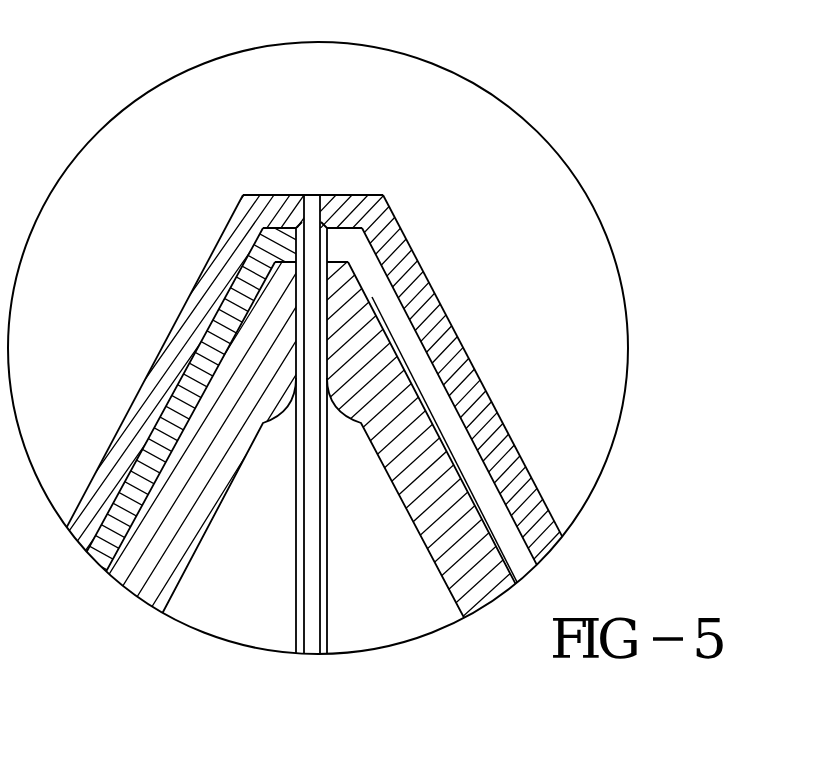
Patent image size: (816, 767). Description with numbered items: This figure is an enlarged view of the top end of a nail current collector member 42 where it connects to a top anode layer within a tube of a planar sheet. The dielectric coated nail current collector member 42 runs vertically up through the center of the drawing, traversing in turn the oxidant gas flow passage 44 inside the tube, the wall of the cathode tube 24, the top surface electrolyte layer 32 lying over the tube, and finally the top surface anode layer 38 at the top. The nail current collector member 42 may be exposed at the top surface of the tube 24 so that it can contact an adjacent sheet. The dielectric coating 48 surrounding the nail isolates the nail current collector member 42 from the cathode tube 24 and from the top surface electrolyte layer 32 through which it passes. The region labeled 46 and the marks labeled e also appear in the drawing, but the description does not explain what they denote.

The cathode tube 24 is at (174, 488).
The top surface electrolyte layer 32 is at (393, 308).
The top surface anode layer 38 is at (402, 232).
The nail current collector member 42 is at (312, 195).
The oxidant gas flow passage 44 is at (258, 588).
The exterior region 46 is at (562, 385).
The dielectric coating 48 is at (325, 503).
The edge e is at (163, 346).